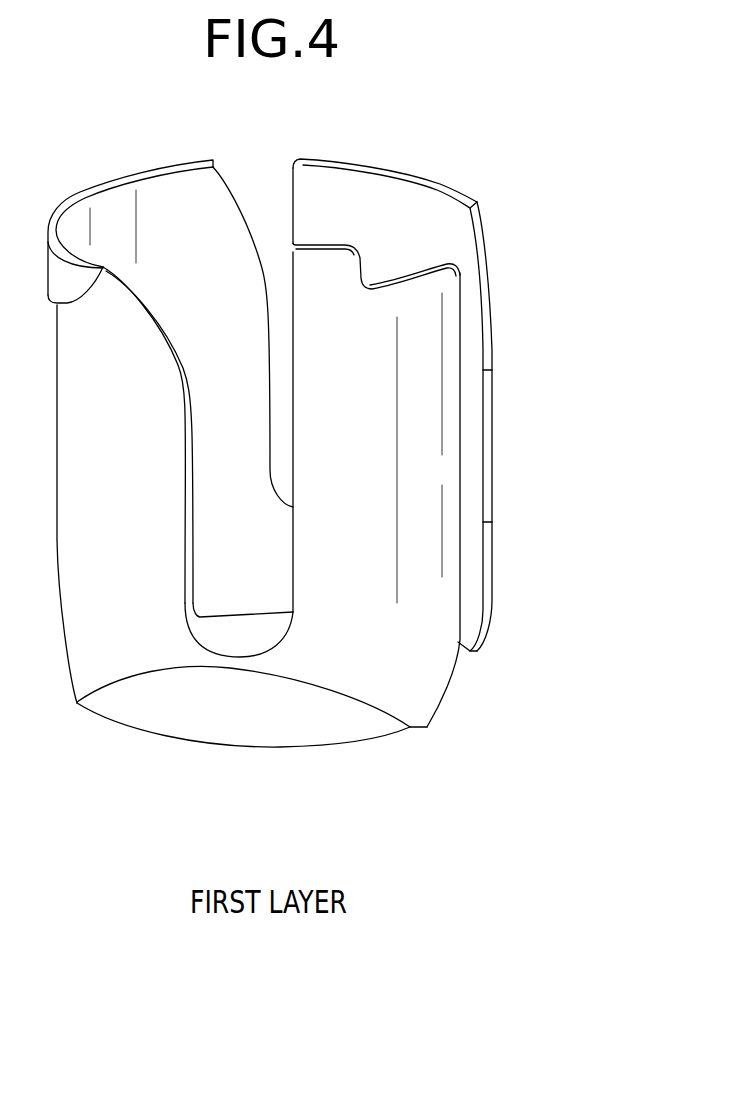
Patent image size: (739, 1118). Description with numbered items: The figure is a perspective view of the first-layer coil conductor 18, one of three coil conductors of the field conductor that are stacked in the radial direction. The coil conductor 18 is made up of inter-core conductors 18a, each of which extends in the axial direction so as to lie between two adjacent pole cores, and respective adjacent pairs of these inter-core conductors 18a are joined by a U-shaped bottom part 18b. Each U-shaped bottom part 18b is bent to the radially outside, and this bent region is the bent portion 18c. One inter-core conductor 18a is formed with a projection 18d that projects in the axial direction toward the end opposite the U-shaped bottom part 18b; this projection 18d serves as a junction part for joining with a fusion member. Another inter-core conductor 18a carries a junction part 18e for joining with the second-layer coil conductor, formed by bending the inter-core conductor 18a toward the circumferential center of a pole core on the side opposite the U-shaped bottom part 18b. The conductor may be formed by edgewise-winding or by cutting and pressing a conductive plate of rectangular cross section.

The coil conductor 18 is at (468, 176).
The inter-core conductor 18a is at (420, 470).
The U-shaped bottom part 18b is at (105, 212).
The bent portion 18c is at (222, 705).
The projection 18d is at (327, 260).
The junction part 18e is at (302, 203).